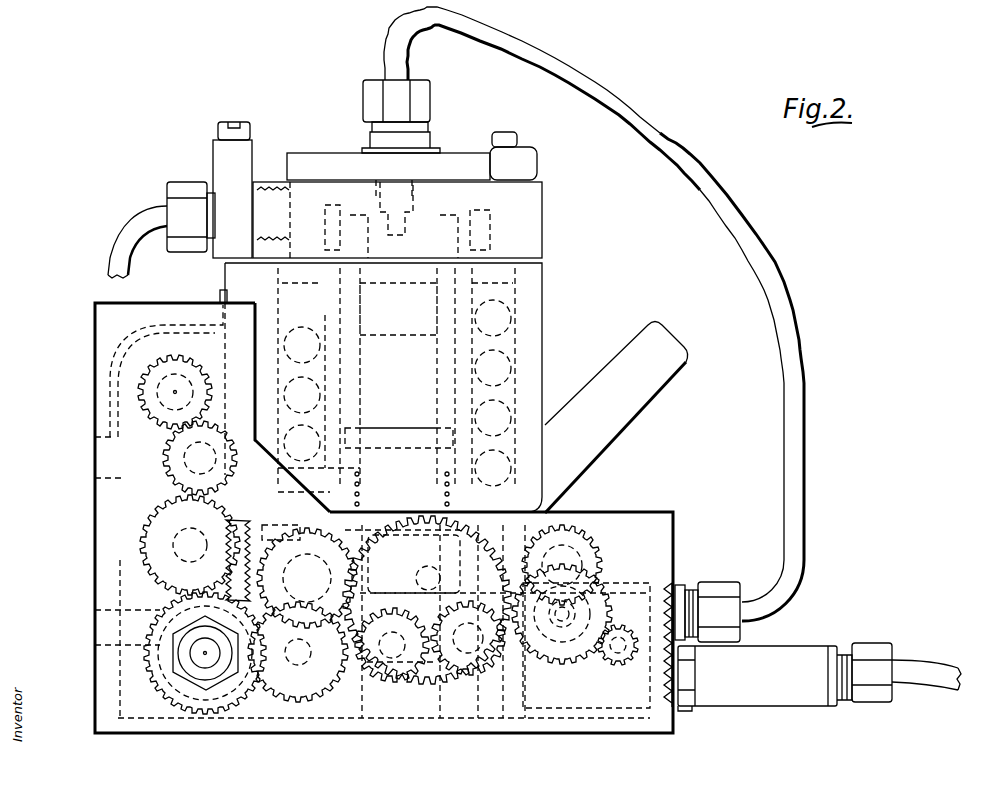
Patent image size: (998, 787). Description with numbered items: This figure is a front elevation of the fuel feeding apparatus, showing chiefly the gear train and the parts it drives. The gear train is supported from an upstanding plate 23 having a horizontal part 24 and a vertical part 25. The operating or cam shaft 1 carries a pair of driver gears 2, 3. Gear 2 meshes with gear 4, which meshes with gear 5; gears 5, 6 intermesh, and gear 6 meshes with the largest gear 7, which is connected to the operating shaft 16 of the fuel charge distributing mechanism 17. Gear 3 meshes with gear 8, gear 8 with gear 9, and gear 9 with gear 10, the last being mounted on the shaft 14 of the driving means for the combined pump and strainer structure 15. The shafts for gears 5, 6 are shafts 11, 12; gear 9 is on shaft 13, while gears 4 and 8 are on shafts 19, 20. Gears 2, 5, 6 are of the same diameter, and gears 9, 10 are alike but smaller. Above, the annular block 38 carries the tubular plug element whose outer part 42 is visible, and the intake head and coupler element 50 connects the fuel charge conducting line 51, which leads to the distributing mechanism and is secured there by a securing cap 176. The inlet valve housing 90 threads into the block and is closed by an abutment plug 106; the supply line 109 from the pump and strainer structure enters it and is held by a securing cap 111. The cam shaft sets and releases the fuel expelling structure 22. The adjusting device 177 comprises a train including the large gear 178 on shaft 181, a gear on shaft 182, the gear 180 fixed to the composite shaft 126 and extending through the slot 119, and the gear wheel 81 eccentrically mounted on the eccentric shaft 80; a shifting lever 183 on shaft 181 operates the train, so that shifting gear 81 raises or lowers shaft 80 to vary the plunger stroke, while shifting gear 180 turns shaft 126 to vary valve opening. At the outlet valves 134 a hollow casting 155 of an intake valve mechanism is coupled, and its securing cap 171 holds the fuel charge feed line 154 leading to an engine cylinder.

The operating shaft 1 is at (205, 655).
The gear 2 is at (200, 655).
The gear 3 is at (160, 628).
The gear 4 is at (300, 700).
The gear 5 is at (394, 662).
The gear 6 is at (462, 660).
The gear 7 is at (562, 640).
The gear 8 is at (140, 523).
The gear 9 is at (175, 470).
The gear 10 is at (115, 402).
The shaft 11 is at (385, 660).
The shaft 12 is at (446, 672).
The shaft 13 is at (160, 456).
The shaft 14 is at (138, 382).
The combined pump and strainer structure 15 is at (135, 358).
The operating shaft 16 is at (555, 640).
The fuel charge distributing mechanism 17 is at (640, 588).
The shaft 19 is at (295, 668).
The shaft 20 is at (175, 548).
The fuel expelling structure 22 is at (548, 306).
The upstanding plate 23 is at (252, 297).
The horizontal part 24 is at (655, 520).
The vertical part 25 is at (155, 303).
The annular block 38 is at (525, 208).
The outer part 42 is at (305, 160).
The intake head and coupler element 50 is at (362, 86).
The fuel charge conducting line 51 is at (608, 100).
The eccentric shaft 80 is at (307, 578).
The gear wheel 81 is at (290, 535).
The housing 90 is at (204, 160).
The abutment plug 106 is at (222, 124).
The supply line 109 is at (125, 232).
The securing cap 111 is at (178, 198).
The slot 119 is at (548, 558).
The composite shaft 126 is at (607, 665).
The outlet valves 134 is at (696, 713).
The fuel charge feed line 154 is at (930, 668).
The hollow casting 155 is at (790, 655).
The securing cap 171 is at (876, 650).
The securing cap 176 is at (716, 582).
The adjusting device 177 is at (634, 440).
The gear 178 is at (432, 510).
The gear 180 is at (690, 582).
The shaft 181 is at (425, 566).
The shaft 182 is at (575, 535).
The shifting lever 183 is at (660, 353).